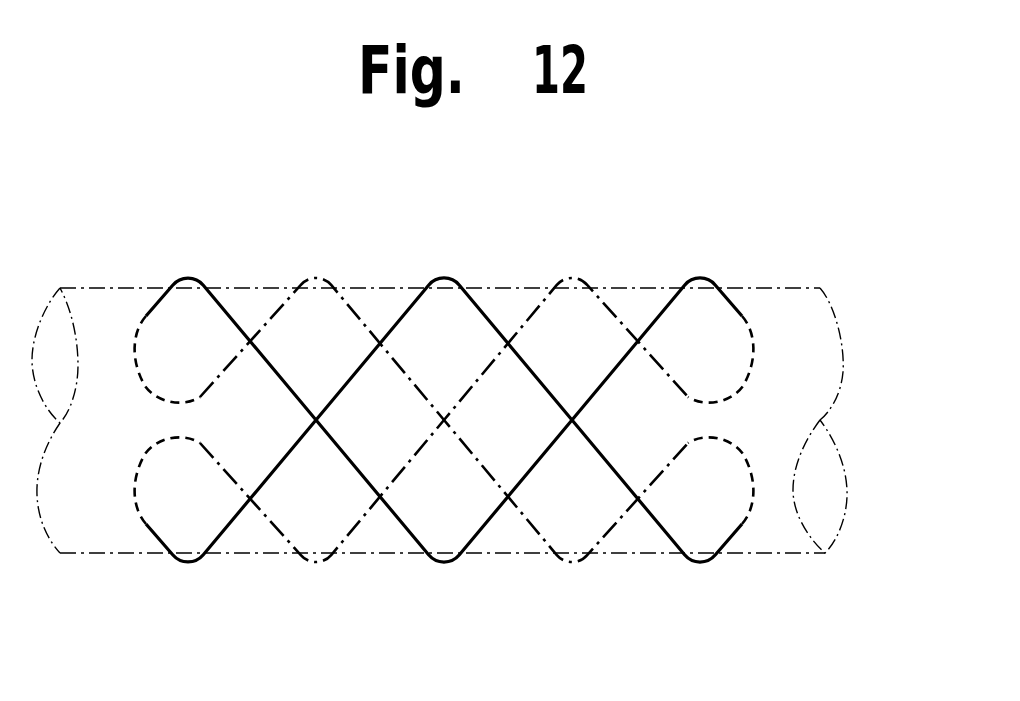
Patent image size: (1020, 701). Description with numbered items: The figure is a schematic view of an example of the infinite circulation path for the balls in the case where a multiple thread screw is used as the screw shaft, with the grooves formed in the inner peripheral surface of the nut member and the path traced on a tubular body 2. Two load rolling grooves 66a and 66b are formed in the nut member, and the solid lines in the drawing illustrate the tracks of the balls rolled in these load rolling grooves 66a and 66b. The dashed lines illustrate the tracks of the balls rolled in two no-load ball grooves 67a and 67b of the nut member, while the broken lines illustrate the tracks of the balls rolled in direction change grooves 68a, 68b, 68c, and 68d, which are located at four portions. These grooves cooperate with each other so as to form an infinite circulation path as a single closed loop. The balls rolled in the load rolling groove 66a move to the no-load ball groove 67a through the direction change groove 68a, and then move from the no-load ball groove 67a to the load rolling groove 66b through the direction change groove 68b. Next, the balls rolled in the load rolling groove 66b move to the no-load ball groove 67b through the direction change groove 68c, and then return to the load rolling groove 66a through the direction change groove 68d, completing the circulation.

The tubular body (stent) 2 is at (650, 553).
The load rolling groove 66a is at (208, 301).
The load rolling groove 66b is at (477, 303).
The no-load ball groove 67a is at (357, 310).
The no-load ball groove 67b is at (616, 306).
The direction change groove 68a is at (136, 338).
The direction change groove 68b is at (742, 467).
The direction change groove 68c is at (137, 477).
The direction change groove 68d is at (753, 362).